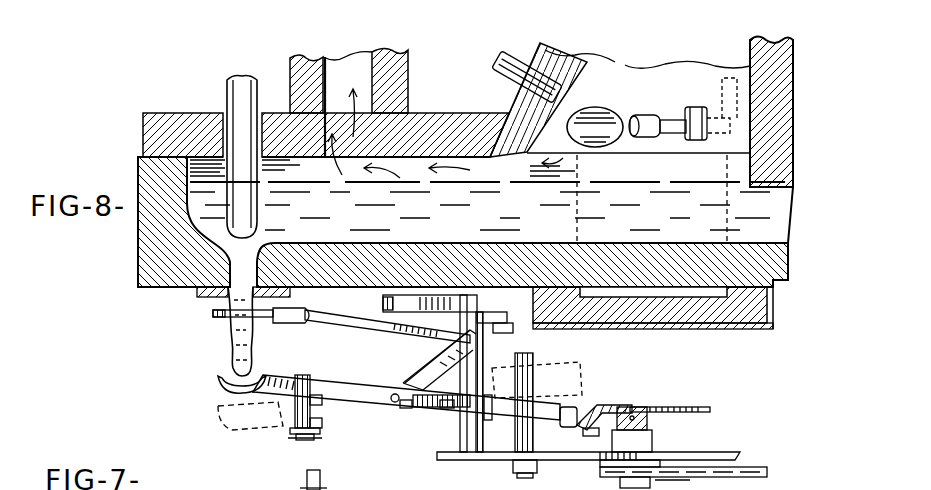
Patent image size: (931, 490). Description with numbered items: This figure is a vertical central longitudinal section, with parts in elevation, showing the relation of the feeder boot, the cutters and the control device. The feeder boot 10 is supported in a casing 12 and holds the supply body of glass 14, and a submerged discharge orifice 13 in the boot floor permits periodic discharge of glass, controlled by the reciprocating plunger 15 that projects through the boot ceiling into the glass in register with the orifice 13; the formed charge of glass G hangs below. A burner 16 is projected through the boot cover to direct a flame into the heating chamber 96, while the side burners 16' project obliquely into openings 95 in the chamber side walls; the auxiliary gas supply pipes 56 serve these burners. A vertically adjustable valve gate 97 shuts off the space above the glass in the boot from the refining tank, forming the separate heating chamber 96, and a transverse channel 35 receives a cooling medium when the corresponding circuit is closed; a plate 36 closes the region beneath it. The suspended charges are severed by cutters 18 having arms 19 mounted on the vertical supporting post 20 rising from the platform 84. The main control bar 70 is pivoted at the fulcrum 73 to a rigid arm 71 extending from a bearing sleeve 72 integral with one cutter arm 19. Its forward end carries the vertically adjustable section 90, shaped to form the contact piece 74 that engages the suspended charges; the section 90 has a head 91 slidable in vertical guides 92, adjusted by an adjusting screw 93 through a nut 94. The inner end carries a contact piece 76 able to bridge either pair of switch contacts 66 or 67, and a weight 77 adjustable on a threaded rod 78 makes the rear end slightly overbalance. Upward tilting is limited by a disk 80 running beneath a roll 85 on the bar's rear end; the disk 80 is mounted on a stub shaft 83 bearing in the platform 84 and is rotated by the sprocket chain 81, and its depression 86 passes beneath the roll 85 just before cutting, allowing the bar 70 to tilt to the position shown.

The feeder boot 10 is at (697, 240).
The casing 12 is at (372, 290).
The discharge orifice 13 is at (232, 266).
The supply body of glass 14 is at (280, 185).
The reciprocating plunger 15 is at (233, 92).
The burner 16 is at (512, 77).
The side burner 16' is at (668, 113).
The cutters 18 is at (230, 314).
The cutter arms 19 is at (326, 320).
The vertical supporting post 20 is at (466, 461).
The transverse channel 35 is at (653, 290).
The bottom plate 36 is at (720, 330).
The auxiliary gas supply pipes 56 is at (731, 96).
The switch contacts 66 is at (530, 397).
The switch contacts 67 is at (530, 365).
The main control bar 70 is at (390, 404).
The rigid arm 71 is at (405, 383).
The bearing sleeve 72 is at (440, 357).
The fulcrum 73 is at (418, 412).
The contact piece 74 is at (224, 376).
The contact piece 76 is at (560, 408).
The weight 77 is at (445, 411).
The threaded rod 78 is at (489, 421).
The disk 80 is at (700, 406).
The sprocket chain 81 is at (690, 477).
The stub shaft 83 is at (640, 406).
The platform 84 is at (590, 462).
The roll 85 is at (595, 408).
The depression 86 is at (590, 434).
The vertically adjustable section 90 is at (266, 395).
The head 91 is at (308, 380).
The vertical guides 92 is at (293, 432).
The adjusting screw 93 is at (322, 425).
The nut 94 is at (318, 402).
The openings 95 is at (568, 133).
The heating chamber 96 is at (632, 62).
The valve gate 97 is at (752, 52).
The glass G is at (250, 350).